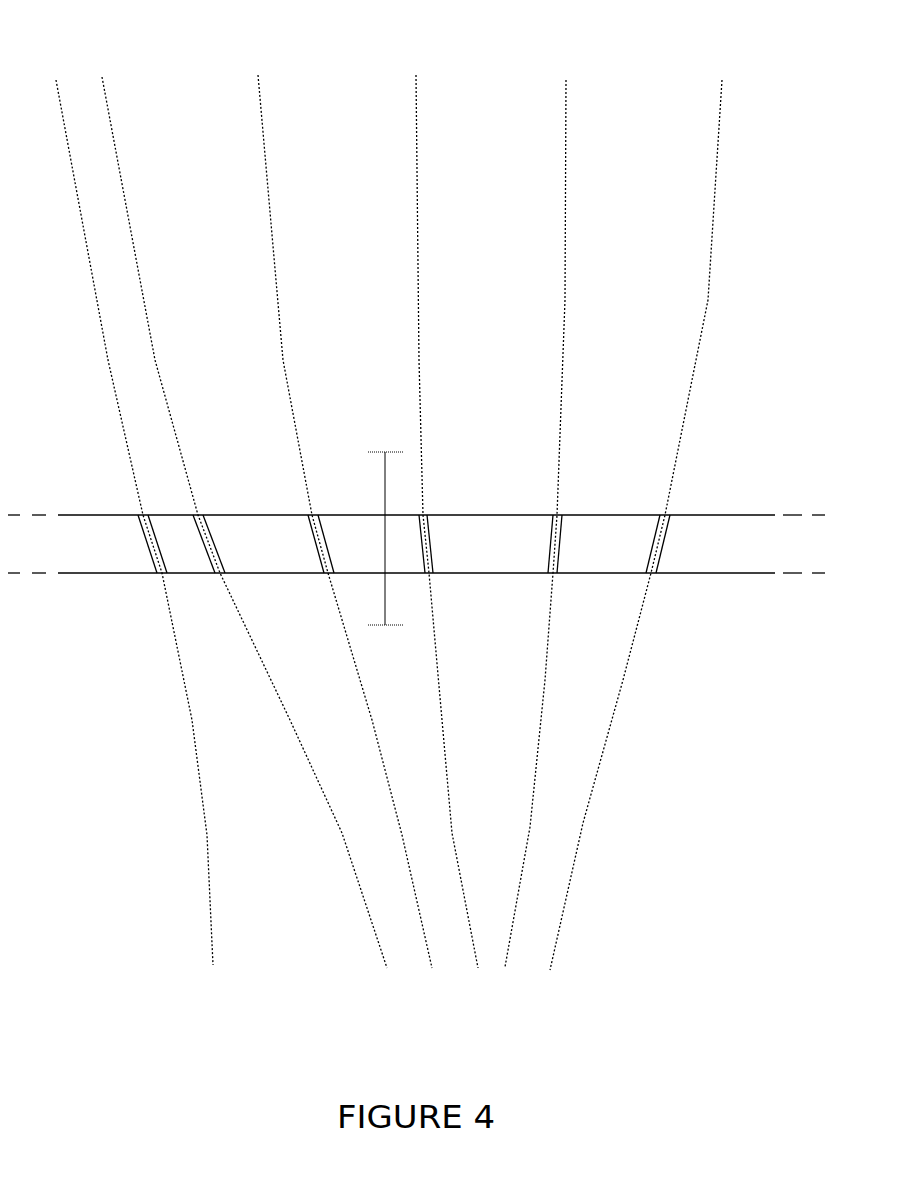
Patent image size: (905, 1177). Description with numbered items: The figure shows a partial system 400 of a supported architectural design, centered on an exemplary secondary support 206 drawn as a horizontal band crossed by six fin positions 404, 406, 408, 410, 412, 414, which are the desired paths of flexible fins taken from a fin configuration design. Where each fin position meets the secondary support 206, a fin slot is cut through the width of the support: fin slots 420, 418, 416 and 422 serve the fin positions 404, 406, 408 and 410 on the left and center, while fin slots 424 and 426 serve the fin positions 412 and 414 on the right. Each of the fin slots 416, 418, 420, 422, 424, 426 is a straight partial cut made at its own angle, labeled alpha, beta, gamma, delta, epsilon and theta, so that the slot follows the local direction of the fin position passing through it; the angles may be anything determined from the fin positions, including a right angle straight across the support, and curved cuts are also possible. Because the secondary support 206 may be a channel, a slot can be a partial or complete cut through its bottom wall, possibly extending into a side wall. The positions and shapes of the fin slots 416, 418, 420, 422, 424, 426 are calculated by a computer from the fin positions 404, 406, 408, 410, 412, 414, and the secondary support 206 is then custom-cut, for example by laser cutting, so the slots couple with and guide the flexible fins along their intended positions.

The partial system 400 is at (750, 89).
The secondary support 206 is at (713, 547).
The fin position 404 is at (207, 835).
The fin position 406 is at (342, 833).
The fin position 408 is at (402, 835).
The fin position 410 is at (452, 833).
The fin position 412 is at (530, 827).
The fin position 414 is at (583, 823).
The fin slot 416 is at (314, 515).
The fin slot 418 is at (198, 515).
The fin slot 420 is at (143, 515).
The fin slot 422 is at (430, 515).
The fin slot 424 is at (565, 515).
The fin slot 426 is at (673, 515).